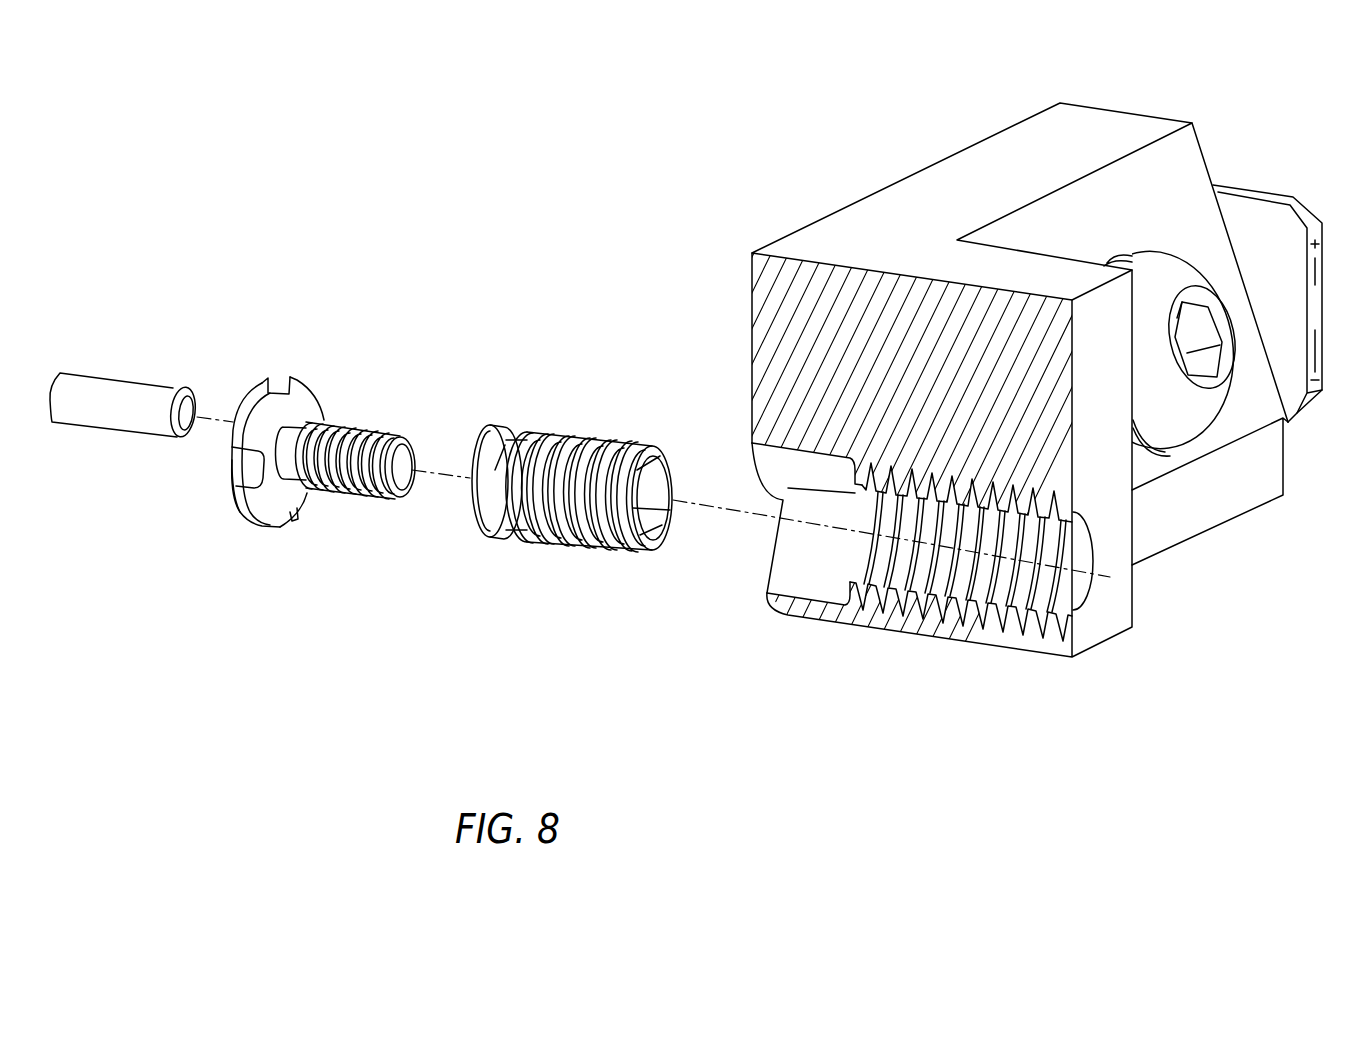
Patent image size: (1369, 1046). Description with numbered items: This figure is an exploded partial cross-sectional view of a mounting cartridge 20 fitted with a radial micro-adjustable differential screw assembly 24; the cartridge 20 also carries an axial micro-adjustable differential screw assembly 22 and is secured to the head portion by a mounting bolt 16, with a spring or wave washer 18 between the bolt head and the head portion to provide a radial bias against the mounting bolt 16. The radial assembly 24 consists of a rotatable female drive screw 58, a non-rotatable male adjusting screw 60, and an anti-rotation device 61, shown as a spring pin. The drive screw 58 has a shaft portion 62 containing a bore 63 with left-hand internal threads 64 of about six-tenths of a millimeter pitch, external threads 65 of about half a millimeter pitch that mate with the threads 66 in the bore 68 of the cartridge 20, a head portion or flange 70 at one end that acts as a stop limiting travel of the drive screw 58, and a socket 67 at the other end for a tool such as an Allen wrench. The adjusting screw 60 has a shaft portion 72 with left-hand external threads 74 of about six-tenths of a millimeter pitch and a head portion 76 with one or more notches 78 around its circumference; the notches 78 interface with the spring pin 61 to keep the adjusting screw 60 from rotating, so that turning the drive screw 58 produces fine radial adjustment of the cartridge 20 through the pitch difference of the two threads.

The mounting bolt 16 is at (1183, 415).
The spring or wave washer 18 is at (1150, 453).
The cartridge 20 is at (637, 184).
The axial micro-adjustable differential screw assembly 22 is at (1334, 190).
The radial micro-adjustable differential screw assembly 24 is at (373, 293).
The female drive screw 58 is at (499, 388).
The adjusting screw 60 is at (225, 487).
The anti-rotation device 61 is at (135, 393).
The shaft portion 62 is at (592, 493).
The bore 63 is at (652, 547).
The internal threads 64 is at (646, 487).
The external threads 65 is at (592, 433).
The threads 66 is at (948, 595).
The socket 67 is at (662, 462).
The bore 68 is at (820, 582).
The head portion or flange 70 is at (470, 507).
The shaft portion 72 is at (350, 420).
The external threads 74 is at (337, 497).
The head portion 76 is at (223, 479).
The notches 78 is at (247, 474).